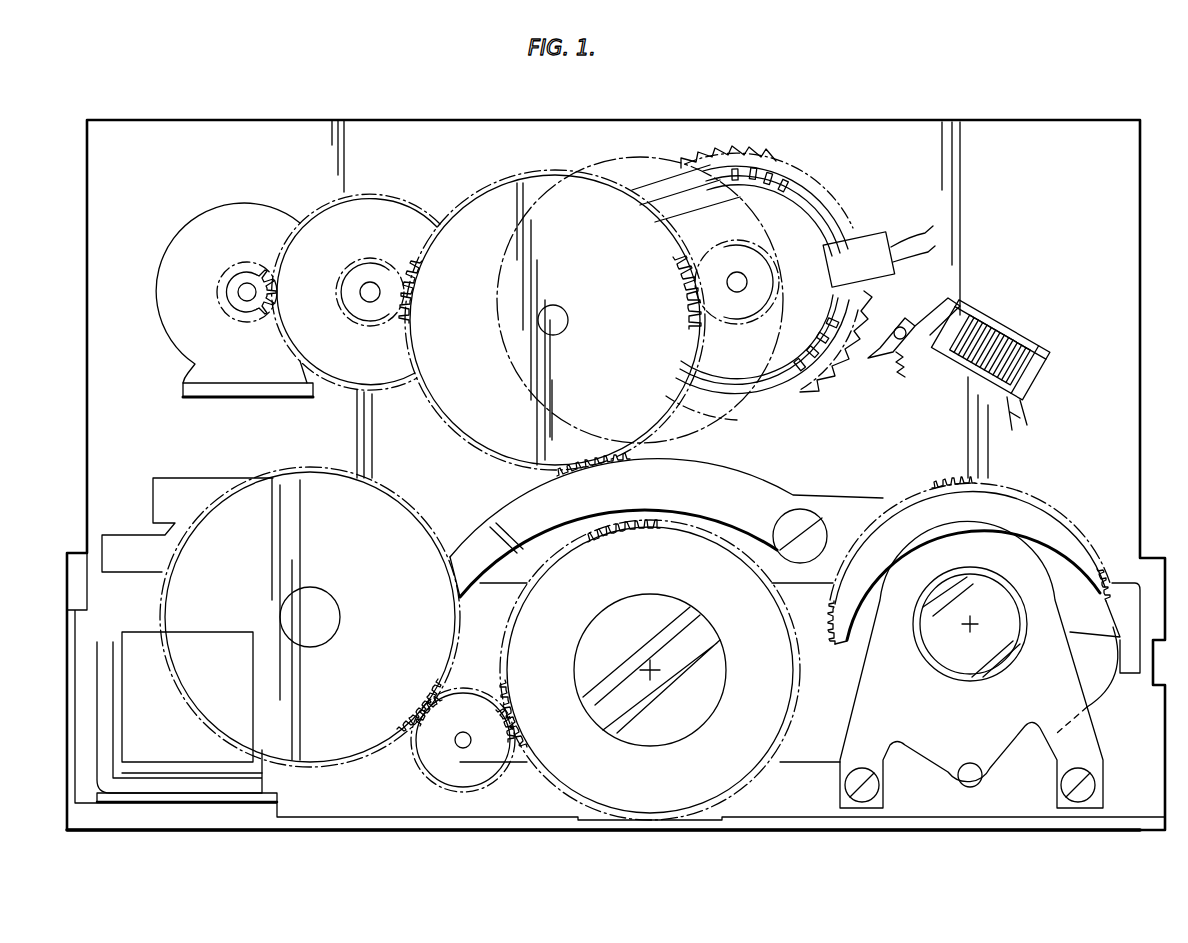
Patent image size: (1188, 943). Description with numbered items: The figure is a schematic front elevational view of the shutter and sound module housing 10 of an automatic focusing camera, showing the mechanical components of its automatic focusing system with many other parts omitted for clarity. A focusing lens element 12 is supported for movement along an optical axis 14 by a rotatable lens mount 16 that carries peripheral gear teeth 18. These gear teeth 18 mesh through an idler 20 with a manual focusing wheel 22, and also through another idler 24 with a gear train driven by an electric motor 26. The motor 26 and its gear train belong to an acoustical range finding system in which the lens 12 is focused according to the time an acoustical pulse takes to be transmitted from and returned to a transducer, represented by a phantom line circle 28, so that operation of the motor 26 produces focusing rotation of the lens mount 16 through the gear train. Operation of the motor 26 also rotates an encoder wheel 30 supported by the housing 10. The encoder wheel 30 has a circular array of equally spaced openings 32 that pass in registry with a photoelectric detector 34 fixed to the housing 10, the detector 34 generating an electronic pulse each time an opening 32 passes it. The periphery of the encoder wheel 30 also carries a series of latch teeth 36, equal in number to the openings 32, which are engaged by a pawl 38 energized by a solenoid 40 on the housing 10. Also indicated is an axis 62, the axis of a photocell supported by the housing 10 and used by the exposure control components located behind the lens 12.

The shutter and sound module housing 10 is at (1122, 398).
The focusing lens element 12 is at (684, 712).
The optical axis 14 is at (652, 665).
The rotatable lens mount 16 is at (722, 765).
The peripheral gear teeth 18 is at (588, 540).
The idler 20 is at (477, 718).
The manual focusing wheel 22 is at (377, 685).
The idler 24 is at (624, 512).
The electric motor 26 is at (232, 206).
The transducer 28 is at (655, 157).
The encoder wheel 30 is at (815, 232).
The openings 32 is at (787, 175).
The photoelectric detector 34 is at (874, 273).
The latch teeth 36 is at (828, 392).
The pawl 38 is at (876, 362).
The solenoid 40 is at (1005, 342).
The axis 62 is at (972, 626).